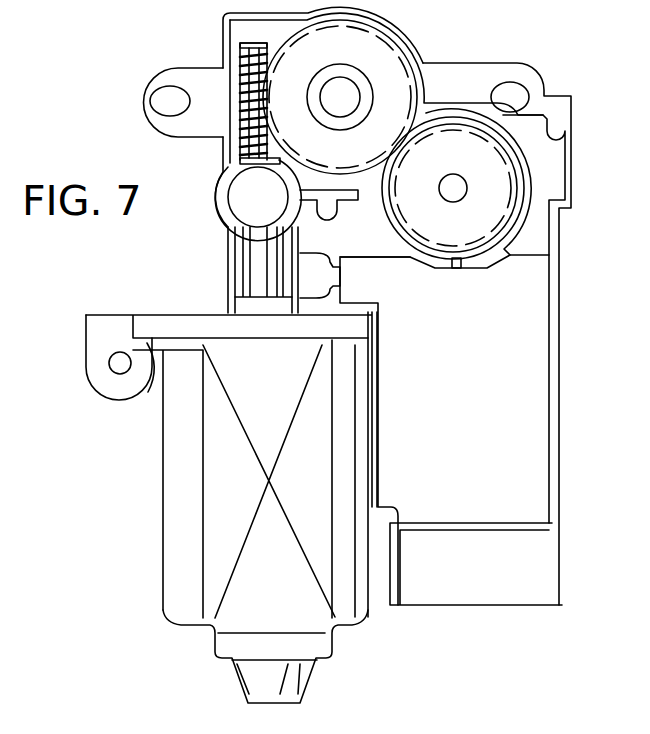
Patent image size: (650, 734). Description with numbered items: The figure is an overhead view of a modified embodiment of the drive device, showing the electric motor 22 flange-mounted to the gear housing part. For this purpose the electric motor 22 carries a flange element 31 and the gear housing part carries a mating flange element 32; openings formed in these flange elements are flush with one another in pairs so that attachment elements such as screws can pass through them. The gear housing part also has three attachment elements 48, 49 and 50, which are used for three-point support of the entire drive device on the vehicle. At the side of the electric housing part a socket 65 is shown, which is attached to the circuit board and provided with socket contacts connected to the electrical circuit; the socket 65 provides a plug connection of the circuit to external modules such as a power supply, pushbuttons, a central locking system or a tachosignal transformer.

The electric motor 22 is at (222, 541).
The flange element 31 is at (150, 393).
The flange element 32 is at (172, 316).
The attachment element 48 is at (513, 71).
The attachment element 49 is at (165, 76).
The attachment element 50 is at (97, 372).
The socket 65 is at (491, 577).